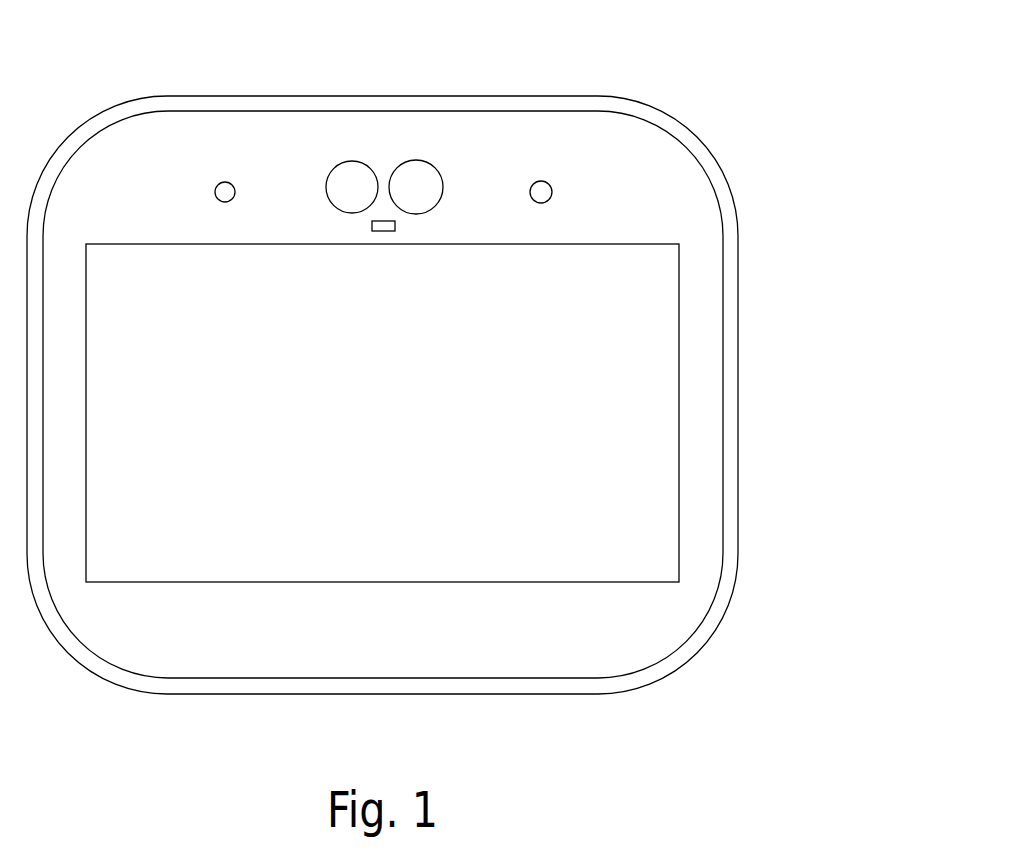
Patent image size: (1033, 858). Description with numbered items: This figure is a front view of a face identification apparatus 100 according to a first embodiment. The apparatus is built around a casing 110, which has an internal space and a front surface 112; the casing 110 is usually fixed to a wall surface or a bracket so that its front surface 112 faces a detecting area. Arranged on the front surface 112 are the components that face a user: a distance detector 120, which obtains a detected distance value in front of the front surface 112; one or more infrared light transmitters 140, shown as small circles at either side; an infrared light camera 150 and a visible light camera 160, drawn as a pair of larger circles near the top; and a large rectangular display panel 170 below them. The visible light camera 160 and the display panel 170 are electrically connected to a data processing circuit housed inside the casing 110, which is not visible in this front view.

The face identification apparatus 100 is at (778, 94).
The casing 110 is at (739, 343).
The front surface 112 is at (721, 229).
The distance detector 120 is at (395, 227).
The infrared light transmitter 140 is at (215, 192).
The infrared light camera 150 is at (441, 175).
The visible light camera 160 is at (328, 172).
The display panel 170 is at (679, 442).